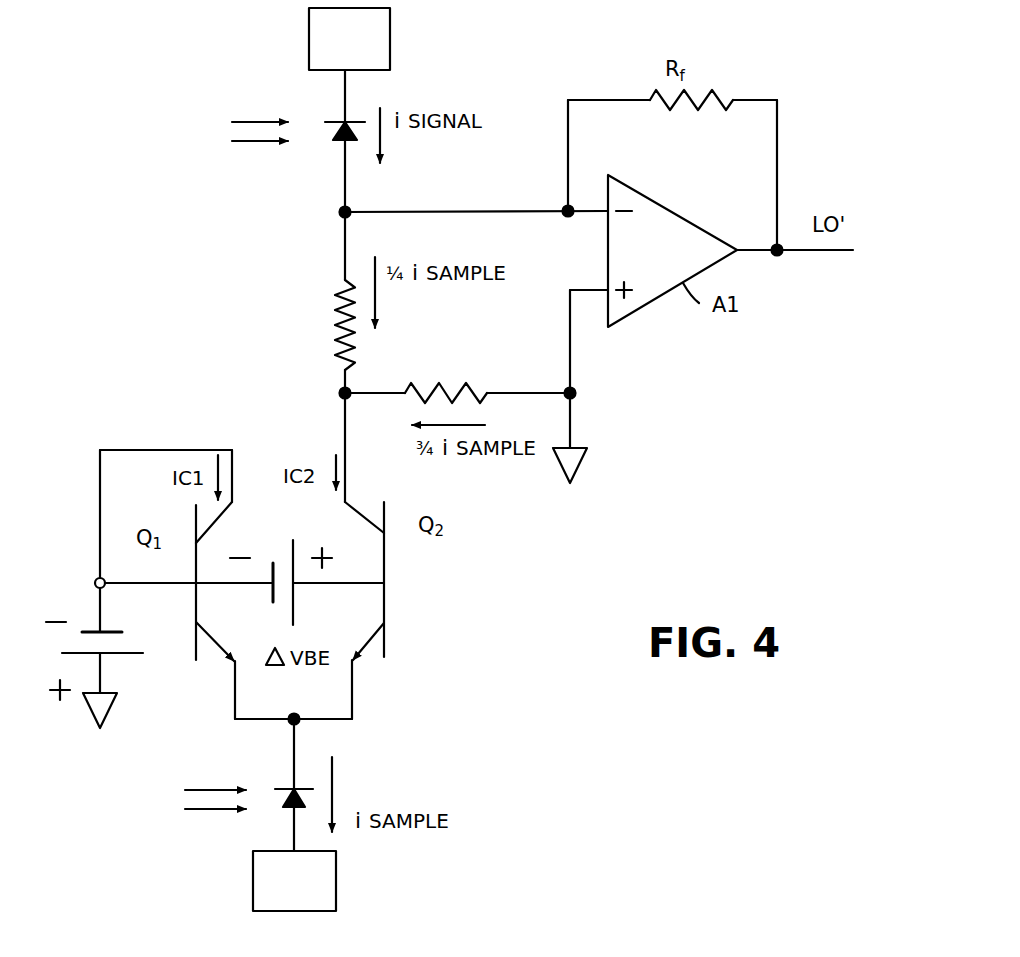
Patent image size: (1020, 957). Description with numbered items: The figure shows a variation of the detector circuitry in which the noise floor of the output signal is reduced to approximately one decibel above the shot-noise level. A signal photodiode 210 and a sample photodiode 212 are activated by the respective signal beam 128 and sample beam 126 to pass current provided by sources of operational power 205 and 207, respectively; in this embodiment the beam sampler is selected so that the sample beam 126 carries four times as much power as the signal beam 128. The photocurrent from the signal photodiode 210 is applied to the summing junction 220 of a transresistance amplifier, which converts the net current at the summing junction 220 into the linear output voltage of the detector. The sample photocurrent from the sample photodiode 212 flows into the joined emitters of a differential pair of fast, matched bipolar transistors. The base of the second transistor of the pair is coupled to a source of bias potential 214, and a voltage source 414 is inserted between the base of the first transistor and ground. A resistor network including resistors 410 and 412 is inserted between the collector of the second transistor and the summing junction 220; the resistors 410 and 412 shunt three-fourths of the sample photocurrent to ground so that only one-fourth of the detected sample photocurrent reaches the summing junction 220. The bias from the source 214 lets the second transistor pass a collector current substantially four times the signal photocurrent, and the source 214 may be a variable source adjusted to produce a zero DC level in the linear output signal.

The source of operational power 205 is at (390, 44).
The signal photodiode 210 is at (348, 120).
The signal beam 128 is at (163, 143).
The summing junction 220 is at (350, 208).
The resistor 410 is at (338, 289).
The resistor 412 is at (478, 388).
The source of bias potential 214 is at (294, 548).
The voltage source 414 is at (122, 660).
The sample photodiode 212 is at (285, 781).
The sample beam 126 is at (145, 806).
The source of operational power 207 is at (336, 875).